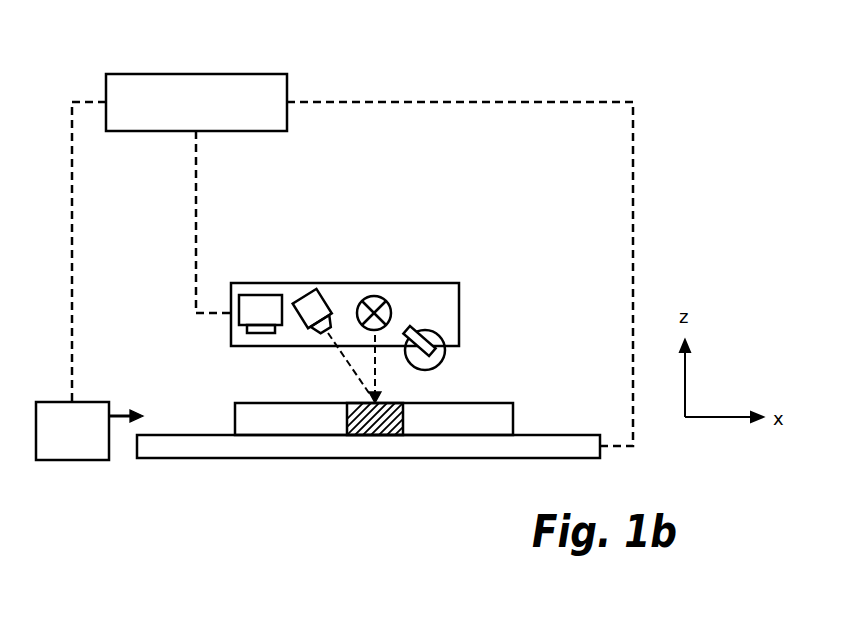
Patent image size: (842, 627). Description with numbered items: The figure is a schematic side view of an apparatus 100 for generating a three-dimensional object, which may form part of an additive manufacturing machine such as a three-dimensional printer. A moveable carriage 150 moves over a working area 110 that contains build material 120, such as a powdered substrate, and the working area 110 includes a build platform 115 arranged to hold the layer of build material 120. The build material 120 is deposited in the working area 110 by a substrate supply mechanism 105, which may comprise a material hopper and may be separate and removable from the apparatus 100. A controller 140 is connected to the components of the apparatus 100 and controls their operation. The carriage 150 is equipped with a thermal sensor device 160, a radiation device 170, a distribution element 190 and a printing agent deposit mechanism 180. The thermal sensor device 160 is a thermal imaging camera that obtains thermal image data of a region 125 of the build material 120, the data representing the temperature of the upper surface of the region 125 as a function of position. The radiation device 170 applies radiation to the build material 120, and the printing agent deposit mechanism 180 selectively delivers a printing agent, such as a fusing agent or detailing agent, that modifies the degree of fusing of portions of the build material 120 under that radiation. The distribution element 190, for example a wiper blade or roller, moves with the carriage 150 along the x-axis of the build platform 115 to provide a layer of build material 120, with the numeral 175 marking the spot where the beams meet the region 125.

The apparatus 100 is at (636, 56).
The substrate supply mechanism 105 is at (89, 431).
The working area 110 is at (160, 490).
The build platform 115 is at (367, 458).
The build material 120 is at (513, 418).
The region of the build material 125 is at (405, 418).
The controller 140 is at (352, 260).
The moveable carriage 150 is at (348, 283).
The thermal sensor device 160 is at (302, 290).
The radiation device 170 is at (378, 296).
The measurement spot 175 is at (378, 372).
The printing agent deposit mechanism 180 is at (256, 346).
The distribution element 190 is at (440, 333).